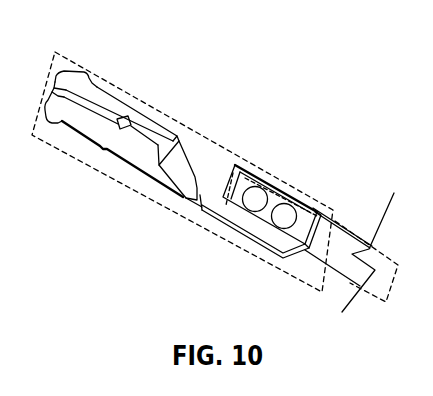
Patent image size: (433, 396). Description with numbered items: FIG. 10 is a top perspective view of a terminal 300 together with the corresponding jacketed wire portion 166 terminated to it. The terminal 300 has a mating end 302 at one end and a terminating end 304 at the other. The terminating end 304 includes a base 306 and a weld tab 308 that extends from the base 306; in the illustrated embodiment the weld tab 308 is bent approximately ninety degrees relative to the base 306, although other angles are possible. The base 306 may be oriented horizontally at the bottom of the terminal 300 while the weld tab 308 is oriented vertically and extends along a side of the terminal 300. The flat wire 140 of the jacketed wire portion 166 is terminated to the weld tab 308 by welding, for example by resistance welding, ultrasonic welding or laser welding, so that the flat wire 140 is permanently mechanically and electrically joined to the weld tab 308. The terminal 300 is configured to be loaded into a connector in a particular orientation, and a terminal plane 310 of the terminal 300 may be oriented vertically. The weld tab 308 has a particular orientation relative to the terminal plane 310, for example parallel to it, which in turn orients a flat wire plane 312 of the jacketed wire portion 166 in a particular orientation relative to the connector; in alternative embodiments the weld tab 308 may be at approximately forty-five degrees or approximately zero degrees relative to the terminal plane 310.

The terminal 300 is at (156, 128).
The mating end 302 is at (84, 74).
The terminating end 304 is at (241, 251).
The base 306 is at (278, 247).
The weld tab 308 is at (263, 178).
The flat wire 140 is at (305, 204).
The jacketed wire portion 166 is at (343, 228).
The terminal plane 310 is at (300, 281).
The flat wire plane 312 is at (386, 302).